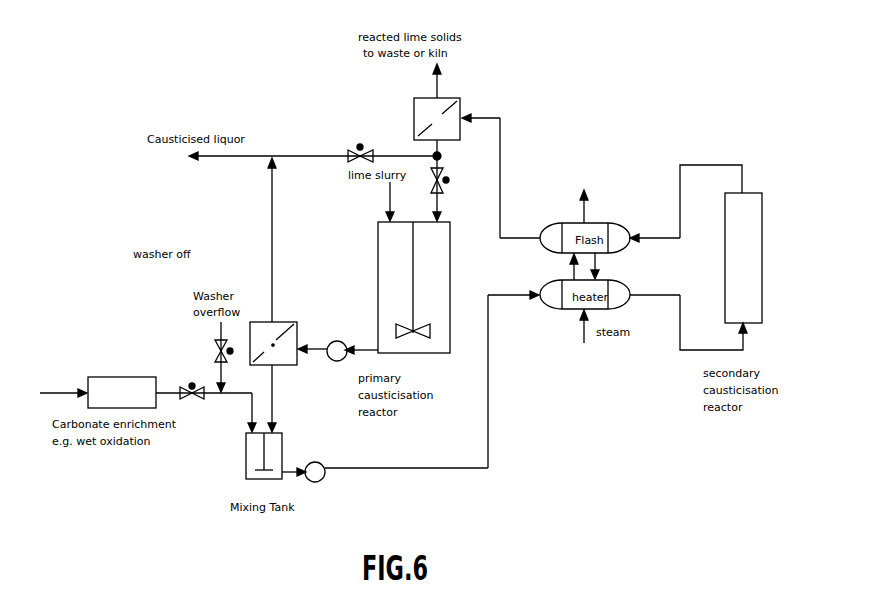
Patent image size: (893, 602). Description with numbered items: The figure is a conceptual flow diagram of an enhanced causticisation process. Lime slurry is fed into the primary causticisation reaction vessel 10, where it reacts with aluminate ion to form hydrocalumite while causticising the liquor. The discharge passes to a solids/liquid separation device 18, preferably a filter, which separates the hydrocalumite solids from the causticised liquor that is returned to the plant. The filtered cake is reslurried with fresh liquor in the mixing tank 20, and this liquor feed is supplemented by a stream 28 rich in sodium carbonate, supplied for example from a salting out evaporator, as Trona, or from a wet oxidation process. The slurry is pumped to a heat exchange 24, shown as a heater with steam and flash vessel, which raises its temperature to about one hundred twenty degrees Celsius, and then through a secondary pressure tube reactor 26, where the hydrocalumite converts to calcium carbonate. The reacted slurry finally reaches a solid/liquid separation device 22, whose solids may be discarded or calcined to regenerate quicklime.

The reaction vessel 10 is at (378, 235).
The solids/liquid separation device 18 is at (284, 322).
The mixing tank 20 is at (246, 455).
The solid/liquid separation device 22 is at (414, 107).
The heat exchange 24 is at (553, 312).
The tube reactor 26 is at (765, 252).
The stream rich in sodium carbonate 28 is at (104, 377).